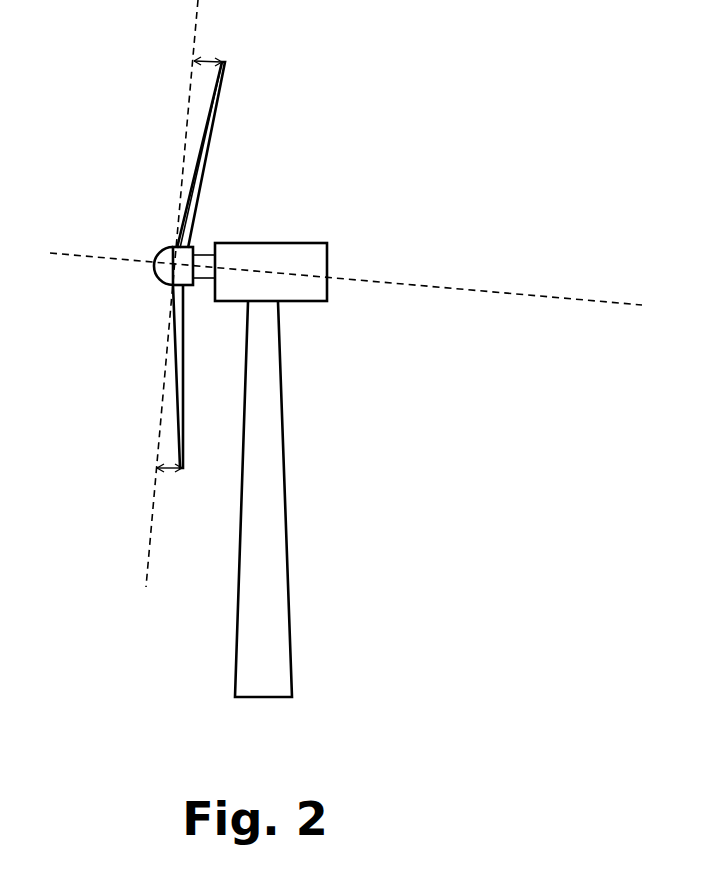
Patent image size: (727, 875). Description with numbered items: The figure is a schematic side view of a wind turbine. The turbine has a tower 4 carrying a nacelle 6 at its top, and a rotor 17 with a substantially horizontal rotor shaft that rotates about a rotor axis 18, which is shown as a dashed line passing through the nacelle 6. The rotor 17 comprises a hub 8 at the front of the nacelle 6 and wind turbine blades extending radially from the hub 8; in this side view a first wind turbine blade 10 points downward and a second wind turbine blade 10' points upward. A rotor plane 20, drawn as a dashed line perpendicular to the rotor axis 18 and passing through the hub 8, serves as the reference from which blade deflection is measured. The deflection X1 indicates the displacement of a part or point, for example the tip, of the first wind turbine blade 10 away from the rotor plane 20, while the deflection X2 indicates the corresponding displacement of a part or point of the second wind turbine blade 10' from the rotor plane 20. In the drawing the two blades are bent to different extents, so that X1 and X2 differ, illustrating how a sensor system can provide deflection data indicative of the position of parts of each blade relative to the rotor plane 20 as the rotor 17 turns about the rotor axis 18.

The tower 4 is at (279, 438).
The nacelle 6 is at (318, 258).
The hub 8 is at (165, 248).
The first wind turbine blade 10 is at (147, 376).
The second wind turbine blade 10' is at (241, 155).
The rotor 17 is at (211, 280).
The rotor axis 18 is at (522, 293).
The rotor plane 20 is at (192, 88).
The deflection of the first wind turbine blade X1 is at (167, 474).
The deflection of the second wind turbine blade X2 is at (207, 56).